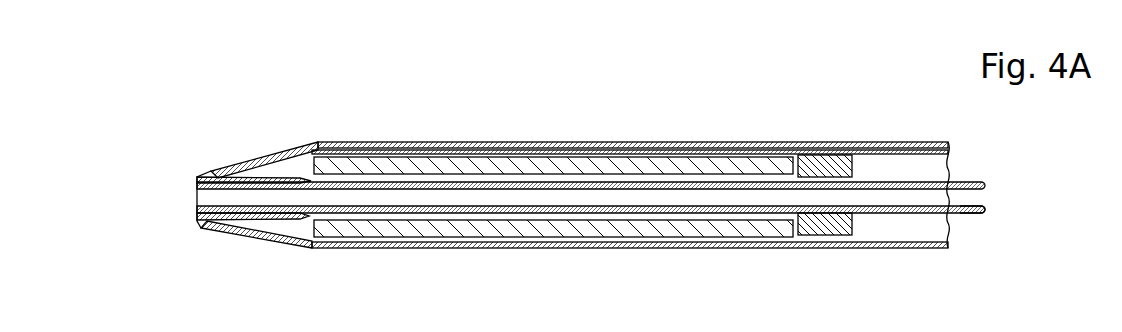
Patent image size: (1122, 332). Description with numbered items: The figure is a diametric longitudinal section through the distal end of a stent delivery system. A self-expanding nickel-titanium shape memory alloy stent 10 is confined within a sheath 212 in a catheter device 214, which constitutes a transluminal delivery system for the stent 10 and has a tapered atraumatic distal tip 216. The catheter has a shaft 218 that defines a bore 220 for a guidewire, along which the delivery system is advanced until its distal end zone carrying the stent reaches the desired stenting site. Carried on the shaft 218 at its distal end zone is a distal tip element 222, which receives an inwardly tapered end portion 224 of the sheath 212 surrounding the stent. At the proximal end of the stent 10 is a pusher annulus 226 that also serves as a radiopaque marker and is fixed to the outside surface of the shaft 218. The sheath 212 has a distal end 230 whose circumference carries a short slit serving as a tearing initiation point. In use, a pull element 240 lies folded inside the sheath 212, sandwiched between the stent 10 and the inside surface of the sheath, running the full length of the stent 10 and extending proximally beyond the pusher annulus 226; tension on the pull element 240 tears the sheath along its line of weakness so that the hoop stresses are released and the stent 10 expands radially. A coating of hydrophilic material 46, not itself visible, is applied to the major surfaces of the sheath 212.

The stent 10 is at (427, 168).
The coating of hydrophilic material 46 is at (732, 143).
The sheath 212 is at (608, 142).
The catheter device 214 is at (786, 132).
The tapered atraumatic distal tip 216 is at (197, 177).
The shaft 218 is at (970, 208).
The bore 220 is at (975, 192).
The distal tip element 222 is at (208, 222).
The inwardly tapered end portion 224 is at (283, 152).
The pusher annulus 226 is at (843, 165).
The distal end of the sheath 230 is at (224, 172).
The pull element 240 is at (523, 152).